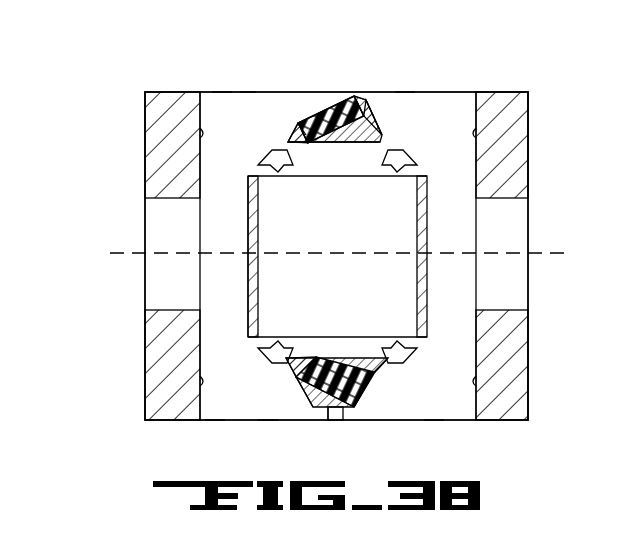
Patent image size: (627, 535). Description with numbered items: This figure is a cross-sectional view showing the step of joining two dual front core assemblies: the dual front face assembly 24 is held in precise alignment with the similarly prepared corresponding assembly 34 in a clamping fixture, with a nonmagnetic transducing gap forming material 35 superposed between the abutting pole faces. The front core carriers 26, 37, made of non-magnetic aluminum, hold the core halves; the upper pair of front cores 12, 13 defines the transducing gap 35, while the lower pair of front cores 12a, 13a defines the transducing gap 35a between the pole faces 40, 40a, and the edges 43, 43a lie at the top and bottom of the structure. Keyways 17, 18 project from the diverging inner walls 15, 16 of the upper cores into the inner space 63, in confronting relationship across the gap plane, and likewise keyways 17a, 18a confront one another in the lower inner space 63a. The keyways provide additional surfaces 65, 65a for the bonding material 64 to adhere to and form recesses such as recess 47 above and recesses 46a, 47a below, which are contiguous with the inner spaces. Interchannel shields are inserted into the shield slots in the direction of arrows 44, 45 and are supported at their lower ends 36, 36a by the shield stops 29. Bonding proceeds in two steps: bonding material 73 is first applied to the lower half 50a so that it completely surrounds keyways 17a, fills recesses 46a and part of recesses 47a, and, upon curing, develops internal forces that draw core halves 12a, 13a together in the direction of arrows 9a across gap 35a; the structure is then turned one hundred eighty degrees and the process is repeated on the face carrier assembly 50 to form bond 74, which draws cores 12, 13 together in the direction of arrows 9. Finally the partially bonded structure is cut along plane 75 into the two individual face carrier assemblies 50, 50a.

The dual front face assembly 24 is at (170, 92).
The front core carrier 26 is at (145, 117).
The face carrier assembly 50 is at (122, 157).
The lower half of the dual face carrier assembly 50a is at (130, 350).
The corresponding assembly 34 is at (518, 92).
The front core carrier 37 is at (530, 168).
The front core 12 is at (222, 92).
The upper housing edge 43 is at (248, 92).
The front core 13 is at (405, 92).
The cutting plane 75 is at (560, 253).
The shield insertion arrow 44 is at (462, 60).
The shield insertion arrow 45 is at (462, 427).
The shield stop 29 is at (248, 243).
The inner wall 15 is at (258, 178).
The lower end of shield 36 is at (338, 176).
The lower end of shield 36a is at (348, 337).
The inner space 63 is at (352, 144).
The additional surface 65 is at (330, 97).
The transducing gap 35 is at (342, 97).
The bonding material 64 is at (357, 98).
The additional surface 65a is at (362, 104).
The keyway 17 is at (312, 121).
The recess 47 is at (298, 125).
The bond 74 is at (328, 143).
The inner wall 16 is at (412, 165).
The keyway 18 is at (278, 168).
The inner space 63a is at (331, 358).
The bonding material 73 is at (326, 360).
The recess 46a is at (330, 420).
The pole face 40 is at (338, 420).
The transducing gap 35a is at (346, 412).
The pole face 40a is at (362, 406).
The keyway 17a is at (306, 390).
The keyway 18a is at (280, 341).
The drawing force arrow 9 is at (268, 103).
The recess 47a is at (296, 372).
The drawing force arrow 9a is at (402, 398).
The lower housing edge 43a is at (215, 420).
The front core 12a is at (268, 420).
The front core 13a is at (434, 420).